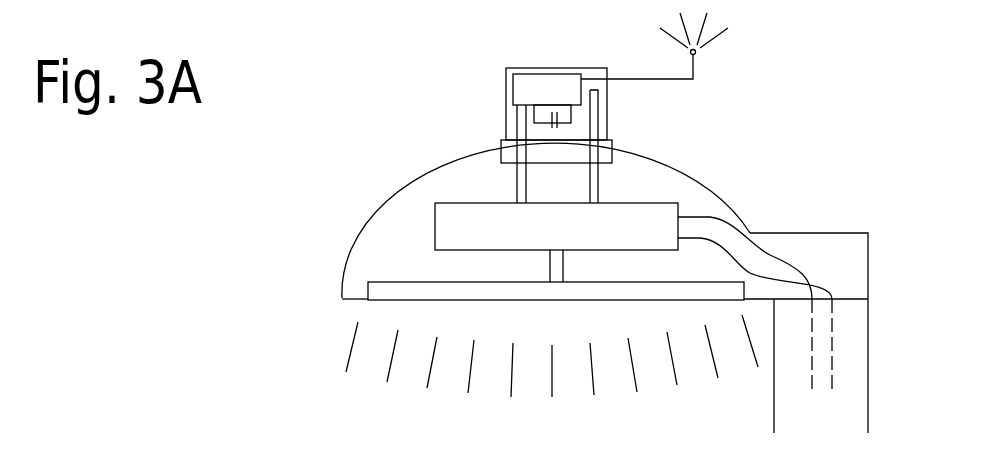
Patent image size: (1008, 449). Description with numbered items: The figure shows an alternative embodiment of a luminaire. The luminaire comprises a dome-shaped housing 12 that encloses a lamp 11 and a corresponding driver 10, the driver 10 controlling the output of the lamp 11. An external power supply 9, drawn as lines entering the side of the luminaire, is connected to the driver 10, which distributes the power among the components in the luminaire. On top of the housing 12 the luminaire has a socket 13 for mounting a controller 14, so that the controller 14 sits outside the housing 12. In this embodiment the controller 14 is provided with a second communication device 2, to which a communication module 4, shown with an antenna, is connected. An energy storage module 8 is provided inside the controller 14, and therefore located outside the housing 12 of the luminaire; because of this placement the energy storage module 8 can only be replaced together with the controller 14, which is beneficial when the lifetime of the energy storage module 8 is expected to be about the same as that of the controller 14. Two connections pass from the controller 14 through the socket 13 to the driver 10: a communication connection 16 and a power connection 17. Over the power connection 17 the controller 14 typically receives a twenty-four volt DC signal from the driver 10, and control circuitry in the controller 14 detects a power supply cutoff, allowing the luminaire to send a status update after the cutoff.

The second communication device 2 is at (575, 72).
The long-distance communication module 4 is at (633, 79).
The energy storage module 8 is at (553, 128).
The external power supply 9 is at (773, 255).
The driver 10 is at (447, 233).
The lamp 11 is at (517, 290).
The housing 12 is at (402, 190).
The socket 13 is at (608, 147).
The controller 14 is at (503, 125).
The communication connection 16 is at (593, 178).
The power connection 17 is at (522, 182).